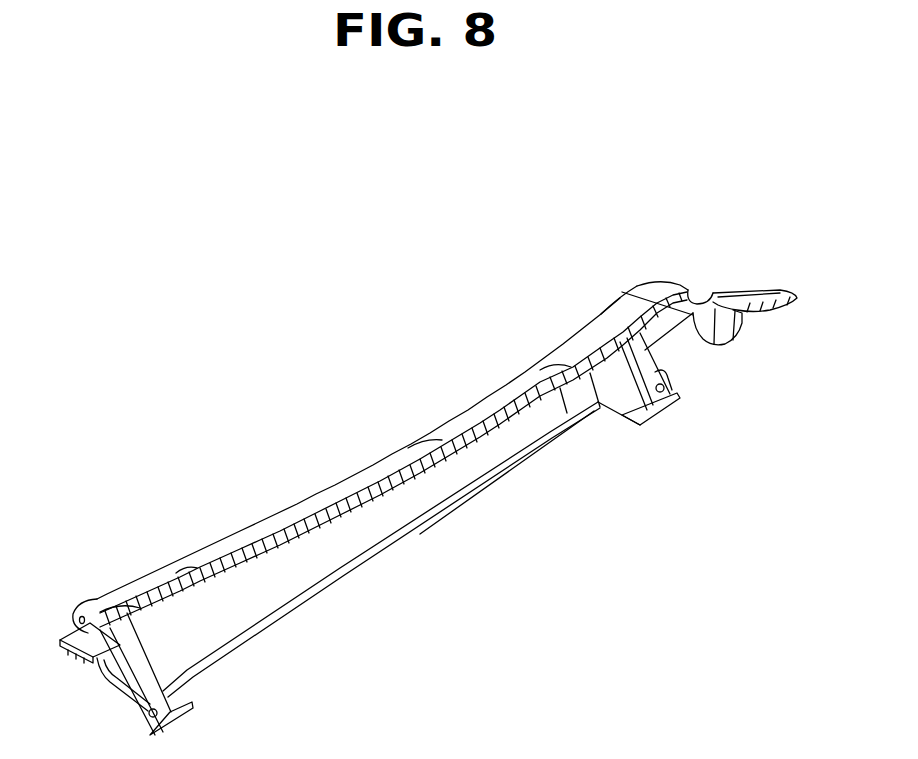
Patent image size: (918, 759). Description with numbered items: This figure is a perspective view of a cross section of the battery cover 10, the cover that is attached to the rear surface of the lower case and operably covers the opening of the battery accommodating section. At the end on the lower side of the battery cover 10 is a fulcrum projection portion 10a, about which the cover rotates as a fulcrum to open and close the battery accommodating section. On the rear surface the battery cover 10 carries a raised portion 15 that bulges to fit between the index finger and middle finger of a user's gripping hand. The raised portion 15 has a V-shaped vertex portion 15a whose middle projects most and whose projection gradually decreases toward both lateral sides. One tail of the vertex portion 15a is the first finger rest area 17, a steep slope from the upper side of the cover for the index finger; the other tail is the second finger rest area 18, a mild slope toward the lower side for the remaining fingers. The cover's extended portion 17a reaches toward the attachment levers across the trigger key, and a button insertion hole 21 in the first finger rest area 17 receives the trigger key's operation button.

The battery cover 10 is at (352, 466).
The fulcrum projection portion 10a is at (78, 643).
The raised portion 15 is at (614, 285).
The vertex portion 15a is at (648, 283).
The first finger rest area 17 is at (717, 285).
The extended portion 17a is at (773, 292).
The second finger rest area 18 is at (516, 400).
The button insertion hole 21 is at (705, 285).